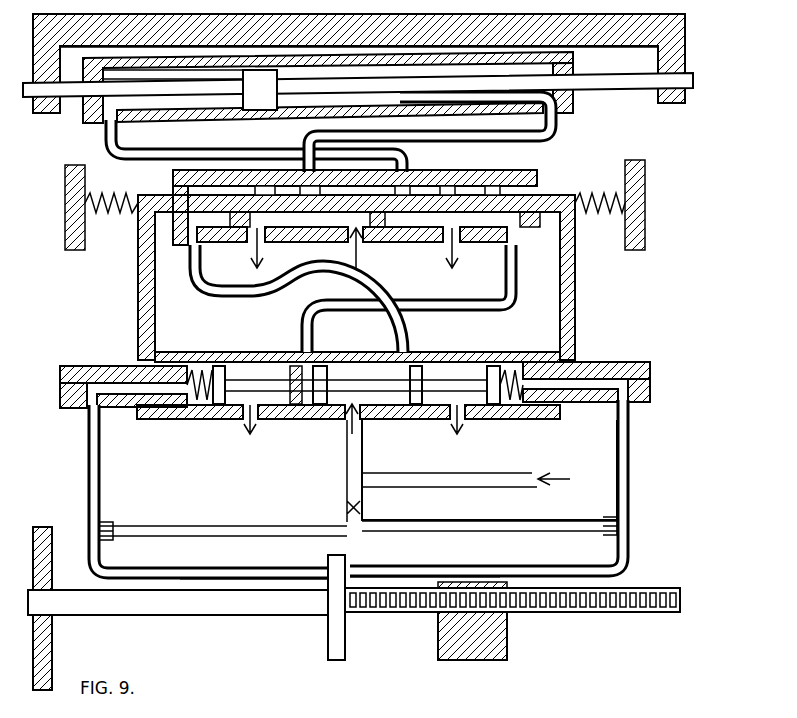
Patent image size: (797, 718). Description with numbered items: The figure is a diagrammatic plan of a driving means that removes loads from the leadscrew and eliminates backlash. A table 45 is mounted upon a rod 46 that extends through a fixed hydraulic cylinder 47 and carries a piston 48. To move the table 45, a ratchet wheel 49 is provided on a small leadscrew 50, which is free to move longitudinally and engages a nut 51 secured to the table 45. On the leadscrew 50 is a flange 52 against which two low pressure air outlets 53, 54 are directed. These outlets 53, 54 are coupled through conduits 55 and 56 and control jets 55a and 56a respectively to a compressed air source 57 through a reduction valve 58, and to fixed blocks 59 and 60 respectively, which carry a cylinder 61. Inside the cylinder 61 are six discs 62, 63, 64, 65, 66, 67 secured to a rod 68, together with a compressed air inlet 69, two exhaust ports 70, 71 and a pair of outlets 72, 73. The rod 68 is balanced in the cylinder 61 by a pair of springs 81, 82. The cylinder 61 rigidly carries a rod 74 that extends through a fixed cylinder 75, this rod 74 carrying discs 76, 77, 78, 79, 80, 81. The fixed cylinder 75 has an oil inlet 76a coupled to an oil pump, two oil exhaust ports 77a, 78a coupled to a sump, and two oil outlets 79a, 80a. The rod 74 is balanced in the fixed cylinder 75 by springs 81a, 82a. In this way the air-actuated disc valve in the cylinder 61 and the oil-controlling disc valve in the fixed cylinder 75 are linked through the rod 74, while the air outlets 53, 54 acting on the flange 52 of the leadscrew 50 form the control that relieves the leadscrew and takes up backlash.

The table 45 is at (585, 30).
The rod 46 is at (622, 86).
The hydraulic cylinder 47 is at (540, 96).
The piston 48 is at (272, 103).
The ratchet wheel 49 is at (54, 660).
The small leadscrew 50 is at (200, 612).
The nut 51 is at (505, 618).
The flange 52 is at (317, 607).
The low pressure air outlet 53 is at (322, 572).
The low pressure air outlet 54 is at (352, 568).
The conduit 55 is at (170, 528).
The control jet 55a is at (108, 526).
The conduit 56 is at (476, 527).
The control jet 56a is at (618, 520).
The compressed air source 57 is at (534, 482).
The reduction valve 58 is at (346, 507).
The fixed block 59 is at (75, 372).
The fixed block 60 is at (612, 368).
The cylinder 61 is at (482, 420).
The disc 62 is at (217, 380).
The disc 63 is at (293, 380).
The disc 64 is at (322, 378).
The disc 65 is at (398, 322).
The disc 66 is at (418, 378).
The disc 67 is at (503, 378).
The rod 68 is at (262, 420).
The compressed air inlet 69 is at (346, 420).
The exhaust port 70 is at (242, 420).
The exhaust port 71 is at (452, 420).
The outlet 72 is at (302, 343).
The outlet 73 is at (388, 420).
The rod 74 is at (135, 198).
The fixed cylinder 75 is at (548, 173).
The disc 76 is at (195, 192).
The oil inlet 76a is at (365, 246).
The disc 77 is at (290, 180).
The oil exhaust port 77a is at (236, 250).
The disc 78 is at (318, 182).
The oil exhaust port 78a is at (450, 258).
The disc 79 is at (405, 182).
The oil outlet 79a is at (331, 134).
The disc 80 is at (492, 182).
The oil outlet 80a is at (448, 182).
The disc / spring 81 is at (155, 420).
The spring 81a is at (118, 220).
The spring 82 is at (515, 420).
The spring 82a is at (598, 213).